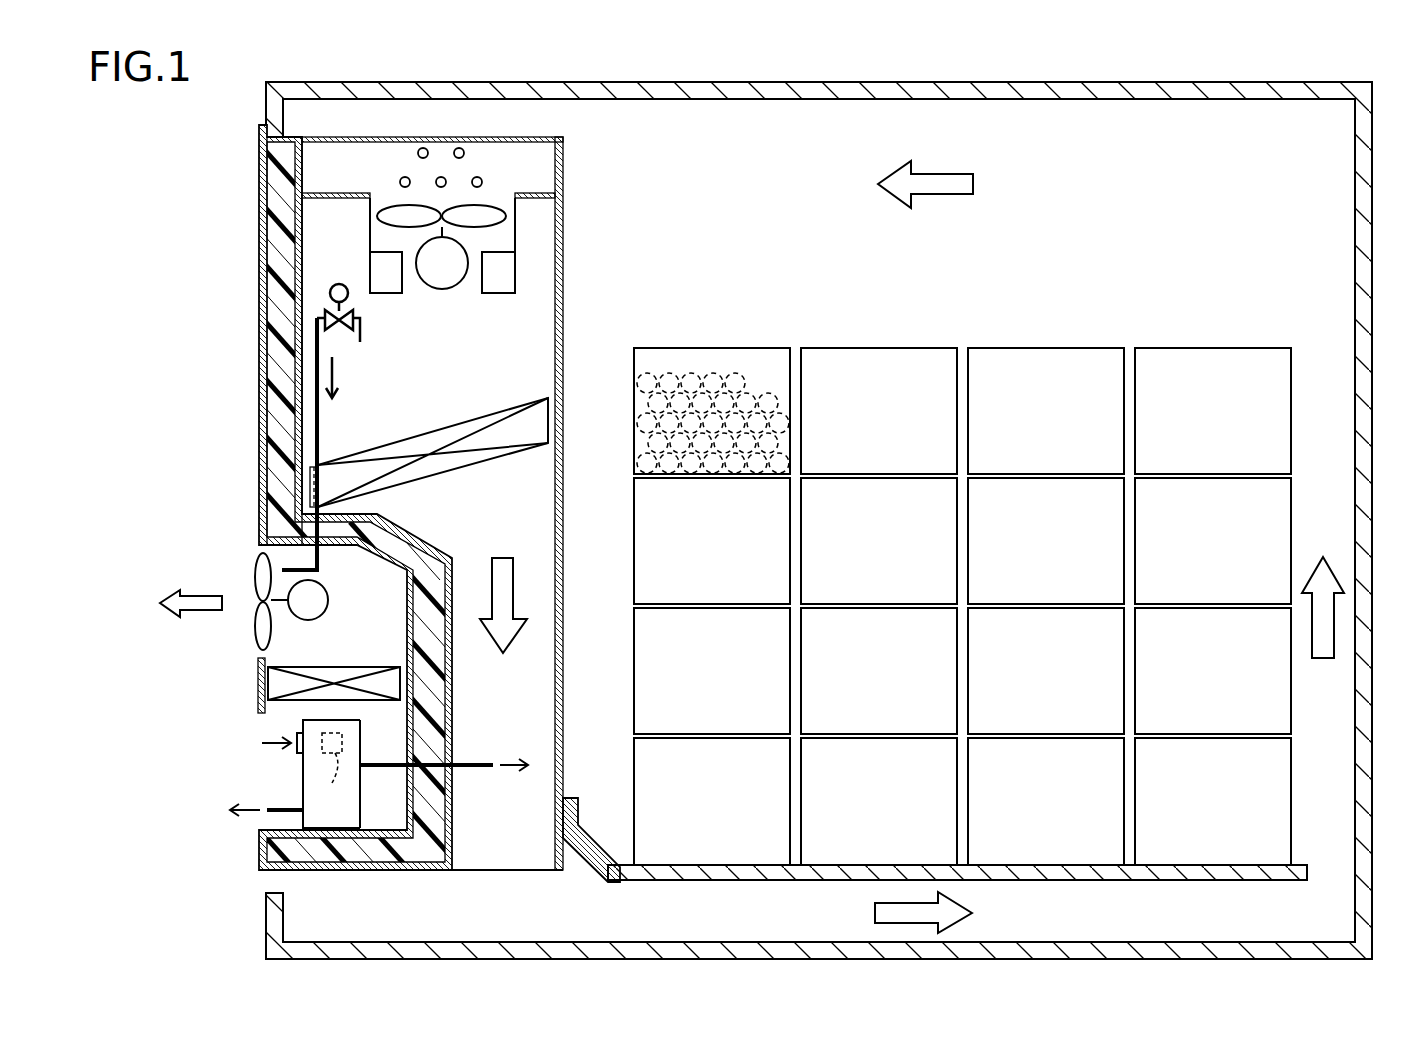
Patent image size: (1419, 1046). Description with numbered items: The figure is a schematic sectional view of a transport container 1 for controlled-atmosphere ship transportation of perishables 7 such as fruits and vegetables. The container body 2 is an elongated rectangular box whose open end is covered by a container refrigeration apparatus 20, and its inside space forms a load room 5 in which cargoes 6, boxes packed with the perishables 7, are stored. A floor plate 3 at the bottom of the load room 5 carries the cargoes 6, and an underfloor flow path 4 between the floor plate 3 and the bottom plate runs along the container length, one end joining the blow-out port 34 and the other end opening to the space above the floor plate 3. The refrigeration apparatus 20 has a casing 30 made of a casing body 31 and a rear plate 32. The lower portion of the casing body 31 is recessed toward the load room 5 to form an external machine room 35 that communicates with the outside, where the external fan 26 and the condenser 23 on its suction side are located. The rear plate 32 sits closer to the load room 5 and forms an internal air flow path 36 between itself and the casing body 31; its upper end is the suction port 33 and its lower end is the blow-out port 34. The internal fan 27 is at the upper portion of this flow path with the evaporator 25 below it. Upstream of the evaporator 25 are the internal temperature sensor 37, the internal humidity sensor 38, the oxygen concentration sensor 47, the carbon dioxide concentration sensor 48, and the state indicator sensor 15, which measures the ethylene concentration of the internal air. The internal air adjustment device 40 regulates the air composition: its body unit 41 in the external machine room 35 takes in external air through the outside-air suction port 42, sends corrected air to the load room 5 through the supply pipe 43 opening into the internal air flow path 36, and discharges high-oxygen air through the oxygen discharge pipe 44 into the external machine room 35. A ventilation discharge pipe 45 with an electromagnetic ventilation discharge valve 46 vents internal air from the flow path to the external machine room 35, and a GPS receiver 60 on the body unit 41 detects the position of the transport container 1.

The transport container 1 is at (1350, 77).
The container body 2 is at (1090, 82).
The floor plate 3 is at (1303, 865).
The underfloor flow path 4 is at (624, 898).
The load room 5 is at (1322, 292).
The cargoes 6 is at (654, 348).
The perishables 7 is at (736, 372).
The state indicator sensor 15 is at (483, 182).
The container refrigeration apparatus 20 is at (257, 168).
The condenser 23 is at (356, 667).
The evaporator 25 is at (445, 426).
The external fan 26 is at (255, 572).
The internal fan 27 is at (400, 226).
The casing 30 is at (260, 225).
The casing body 31 is at (278, 347).
The rear plate 32 is at (563, 232).
The suction port 33 is at (540, 137).
The blow-out port 34 is at (490, 872).
The external machine room 35 is at (303, 643).
The internal air flow path 36 is at (524, 382).
The internal temperature sensor 37 is at (420, 148).
The internal humidity sensor 38 is at (462, 149).
The internal air adjustment device 40 is at (300, 775).
The body unit 41 is at (362, 752).
The outside-air suction port 42 is at (293, 742).
The supply pipe 43 is at (480, 764).
The oxygen discharge pipe 44 is at (265, 808).
The ventilation discharge pipe 45 is at (319, 432).
The ventilation discharge valve 46 is at (340, 330).
The oxygen concentration sensor 47 is at (400, 180).
The carbon dioxide concentration sensor 48 is at (446, 180).
The GPS receiver 60 is at (330, 777).